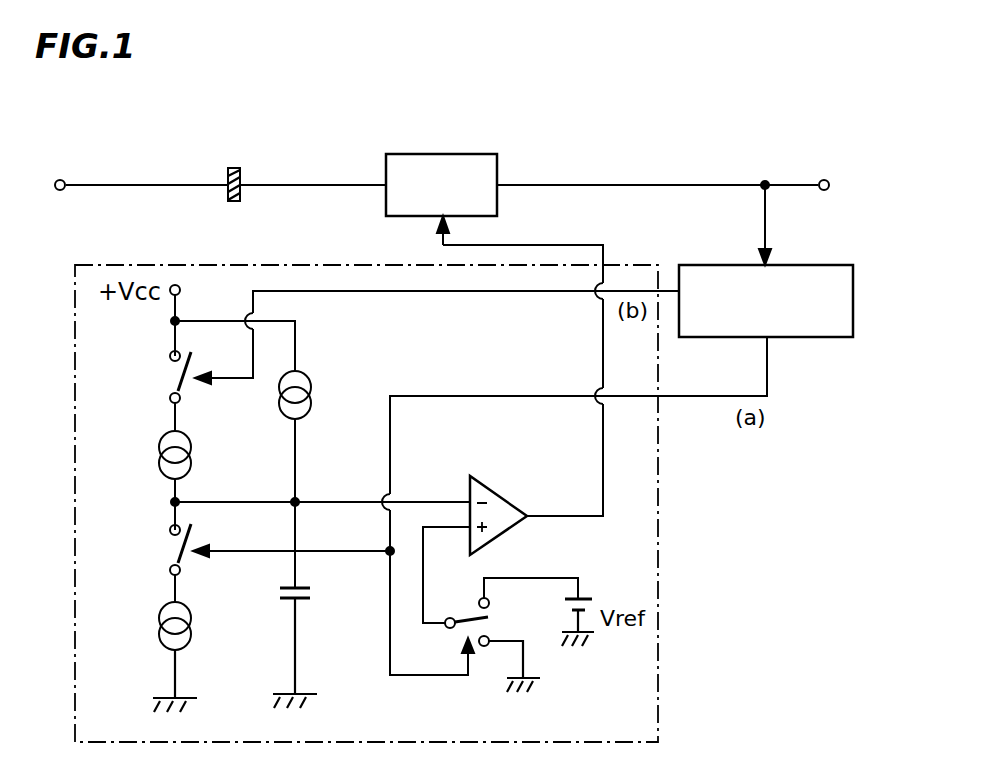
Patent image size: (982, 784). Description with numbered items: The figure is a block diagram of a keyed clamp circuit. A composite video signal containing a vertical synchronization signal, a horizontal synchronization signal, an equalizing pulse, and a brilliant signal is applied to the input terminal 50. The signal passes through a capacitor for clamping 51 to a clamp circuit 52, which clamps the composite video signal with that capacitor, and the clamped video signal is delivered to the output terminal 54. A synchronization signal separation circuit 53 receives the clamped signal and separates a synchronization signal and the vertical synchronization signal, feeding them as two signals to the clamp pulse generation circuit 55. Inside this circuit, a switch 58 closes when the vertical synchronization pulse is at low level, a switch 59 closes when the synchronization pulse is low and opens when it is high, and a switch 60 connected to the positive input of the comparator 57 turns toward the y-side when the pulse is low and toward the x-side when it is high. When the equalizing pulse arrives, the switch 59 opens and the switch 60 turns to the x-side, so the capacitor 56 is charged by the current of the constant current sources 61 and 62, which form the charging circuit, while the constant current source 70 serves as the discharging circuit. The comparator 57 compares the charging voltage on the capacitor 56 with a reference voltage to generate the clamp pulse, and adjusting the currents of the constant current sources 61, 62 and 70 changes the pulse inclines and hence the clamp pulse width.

The input terminal 50 is at (62, 179).
The capacitor for clamping 51 is at (235, 166).
The clamp circuit 52 is at (441, 162).
The synchronization signal separation circuit 53 is at (815, 330).
The output terminal 54 is at (826, 179).
The clamp pulse generation circuit 55 is at (658, 548).
The capacitor 56 is at (305, 602).
The comparator 57 is at (497, 485).
The switch 58 is at (170, 377).
The switch 59 is at (166, 551).
The switch 60 is at (455, 633).
The constant current source 61 is at (193, 450).
The constant current source 62 is at (313, 377).
The constant current source 70 is at (193, 624).